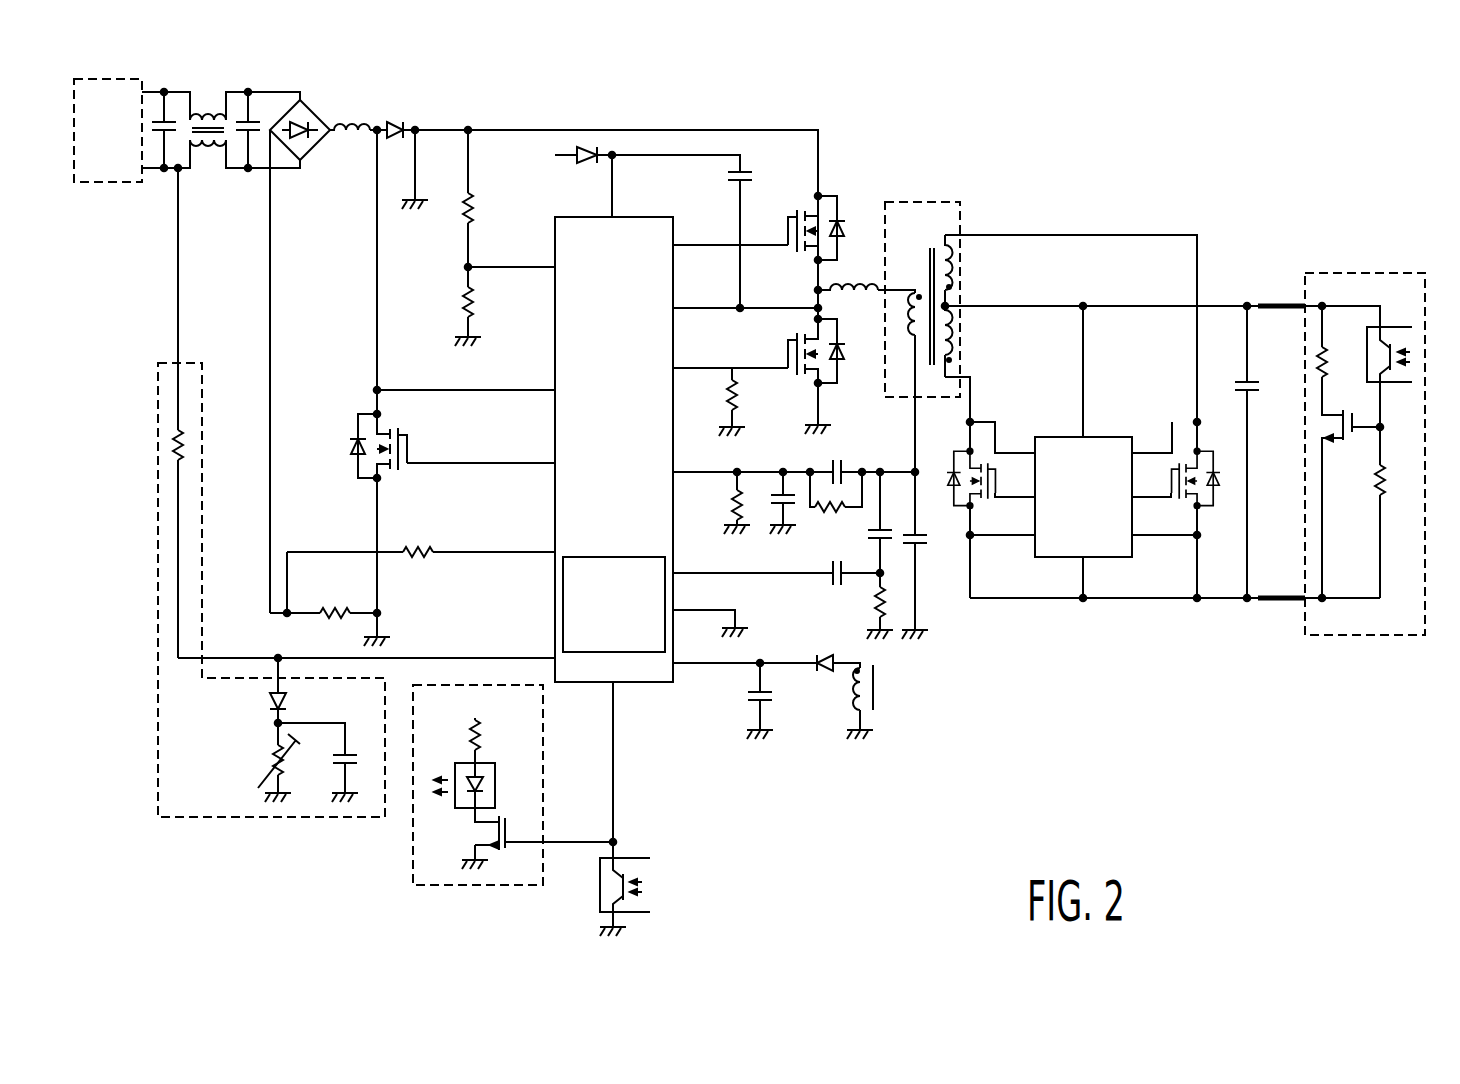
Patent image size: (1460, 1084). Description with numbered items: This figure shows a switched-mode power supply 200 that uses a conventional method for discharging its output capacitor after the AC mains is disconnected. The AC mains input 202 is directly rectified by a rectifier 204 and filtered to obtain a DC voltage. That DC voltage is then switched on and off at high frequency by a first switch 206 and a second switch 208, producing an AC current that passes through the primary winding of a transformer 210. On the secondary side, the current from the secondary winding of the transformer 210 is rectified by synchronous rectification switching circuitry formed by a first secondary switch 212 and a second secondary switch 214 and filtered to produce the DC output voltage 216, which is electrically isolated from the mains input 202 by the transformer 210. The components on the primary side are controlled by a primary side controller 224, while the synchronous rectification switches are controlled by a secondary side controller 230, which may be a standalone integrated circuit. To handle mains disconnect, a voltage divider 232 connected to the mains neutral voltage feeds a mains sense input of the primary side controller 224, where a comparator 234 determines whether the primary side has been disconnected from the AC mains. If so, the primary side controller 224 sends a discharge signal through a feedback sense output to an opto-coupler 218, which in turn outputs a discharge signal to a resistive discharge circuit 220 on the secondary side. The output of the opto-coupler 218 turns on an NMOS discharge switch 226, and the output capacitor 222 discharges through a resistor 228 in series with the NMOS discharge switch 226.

The switched-mode power supply 200 is at (1367, 128).
The AC mains input 202 is at (105, 183).
The rectifier 204 is at (308, 110).
The switch S1 206 is at (838, 380).
The switch S2 208 is at (838, 200).
The transformer 210 is at (960, 212).
The switch Qsec1 212 is at (956, 508).
The switch Qsec2 214 is at (1205, 508).
The output voltage Vout 216 is at (1282, 277).
The opto-coupler 218 is at (413, 862).
The resistive discharge circuit 220 is at (1348, 460).
The output capacitor Cout 222 is at (1255, 395).
The primary side controller 224 is at (637, 502).
The NMOS discharge switch 226 is at (1335, 442).
The resistor 228 is at (1323, 360).
The secondary side controller 230 is at (1055, 560).
The voltage divider 232 is at (190, 818).
The comparator 234 is at (622, 557).